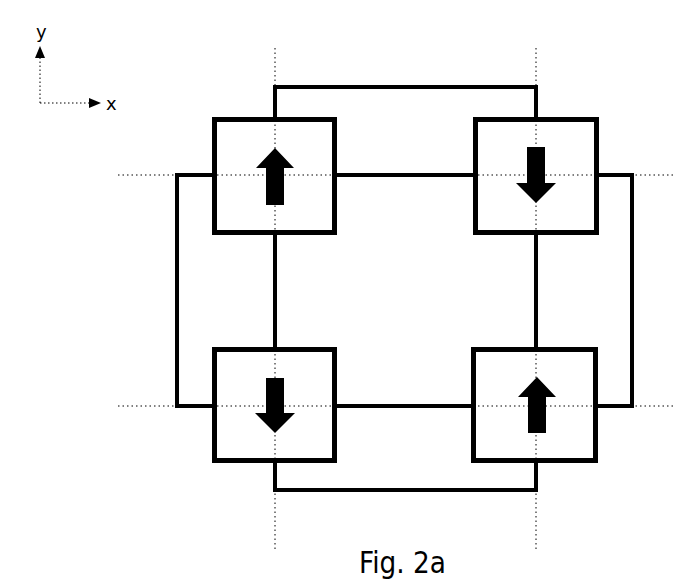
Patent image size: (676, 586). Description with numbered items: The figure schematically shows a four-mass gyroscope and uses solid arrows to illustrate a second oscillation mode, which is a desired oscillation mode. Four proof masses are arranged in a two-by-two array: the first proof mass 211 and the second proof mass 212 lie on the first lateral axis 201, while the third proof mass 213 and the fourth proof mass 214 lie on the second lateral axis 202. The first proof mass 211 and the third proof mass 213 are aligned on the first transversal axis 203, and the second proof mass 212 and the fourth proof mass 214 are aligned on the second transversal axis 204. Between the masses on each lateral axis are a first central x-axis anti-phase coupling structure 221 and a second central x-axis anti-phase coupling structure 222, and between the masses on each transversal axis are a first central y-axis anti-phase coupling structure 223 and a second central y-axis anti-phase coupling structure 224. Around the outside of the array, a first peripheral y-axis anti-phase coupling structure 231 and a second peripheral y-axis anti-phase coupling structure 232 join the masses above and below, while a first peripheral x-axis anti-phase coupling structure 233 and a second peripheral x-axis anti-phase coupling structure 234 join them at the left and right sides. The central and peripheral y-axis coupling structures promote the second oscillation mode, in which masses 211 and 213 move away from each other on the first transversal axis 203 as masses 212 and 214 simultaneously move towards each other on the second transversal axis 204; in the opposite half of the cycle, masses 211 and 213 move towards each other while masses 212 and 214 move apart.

The first lateral axis 201 is at (371, 176).
The second lateral axis 202 is at (372, 405).
The first transversal axis 203 is at (278, 286).
The second transversal axis 204 is at (536, 286).
The first proof mass 211 is at (275, 176).
The second proof mass 212 is at (536, 176).
The third proof mass 213 is at (275, 405).
The fourth proof mass 214 is at (535, 405).
The first central x-axis anti-phase coupling structure 221 is at (392, 190).
The second central x-axis anti-phase coupling structure 222 is at (397, 392).
The first central y-axis anti-phase coupling structure 223 is at (289, 294).
The second central y-axis anti-phase coupling structure 224 is at (522, 293).
The first peripheral y-axis anti-phase coupling structure 231 is at (391, 101).
The second peripheral y-axis anti-phase coupling structure 232 is at (397, 482).
The first peripheral x-axis anti-phase coupling structure 233 is at (188, 296).
The second peripheral x-axis anti-phase coupling structure 234 is at (619, 296).